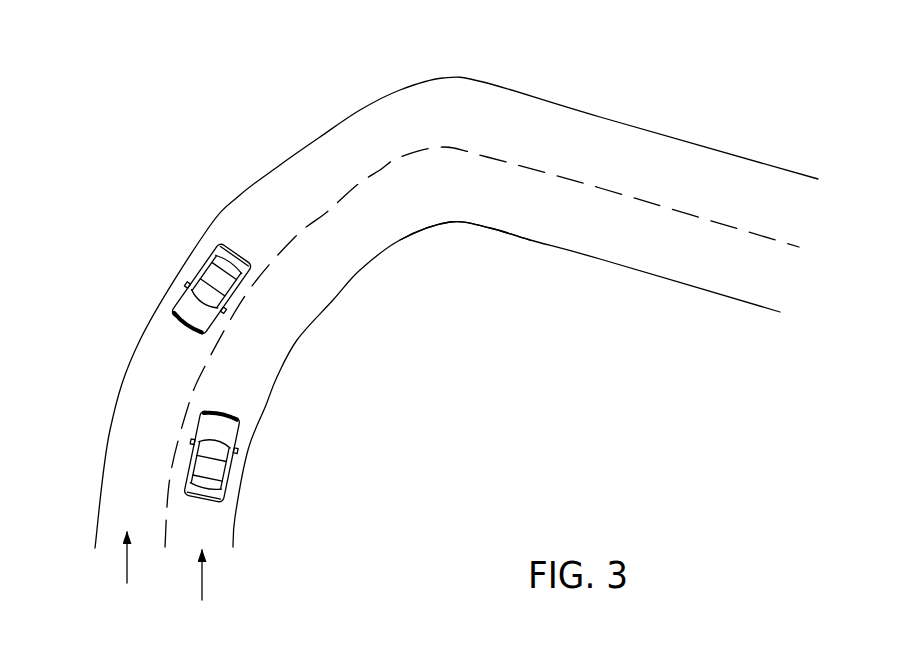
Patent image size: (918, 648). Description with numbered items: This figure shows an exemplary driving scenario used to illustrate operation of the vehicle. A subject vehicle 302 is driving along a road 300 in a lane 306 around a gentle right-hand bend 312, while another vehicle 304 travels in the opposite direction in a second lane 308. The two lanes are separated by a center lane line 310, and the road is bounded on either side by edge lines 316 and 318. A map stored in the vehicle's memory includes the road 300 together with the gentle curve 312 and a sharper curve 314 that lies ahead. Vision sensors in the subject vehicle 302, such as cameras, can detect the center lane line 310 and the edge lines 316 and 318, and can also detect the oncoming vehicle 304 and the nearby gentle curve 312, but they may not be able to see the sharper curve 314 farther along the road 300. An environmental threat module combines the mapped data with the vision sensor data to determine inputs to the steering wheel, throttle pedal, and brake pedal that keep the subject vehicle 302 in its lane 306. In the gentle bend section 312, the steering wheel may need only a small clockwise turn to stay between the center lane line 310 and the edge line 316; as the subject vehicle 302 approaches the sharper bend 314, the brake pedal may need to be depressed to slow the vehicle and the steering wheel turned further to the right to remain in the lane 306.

The road 300 is at (426, 279).
The subject vehicle 302 is at (217, 470).
The another vehicle 304 is at (197, 275).
The lane 306 is at (202, 595).
The second lane 308 is at (127, 575).
The center lane line 310 is at (227, 324).
The gentle right-hand bend 312 is at (506, 384).
The sharper curve 314 is at (447, 230).
The edge line 316 is at (277, 377).
The edge line 318 is at (137, 345).